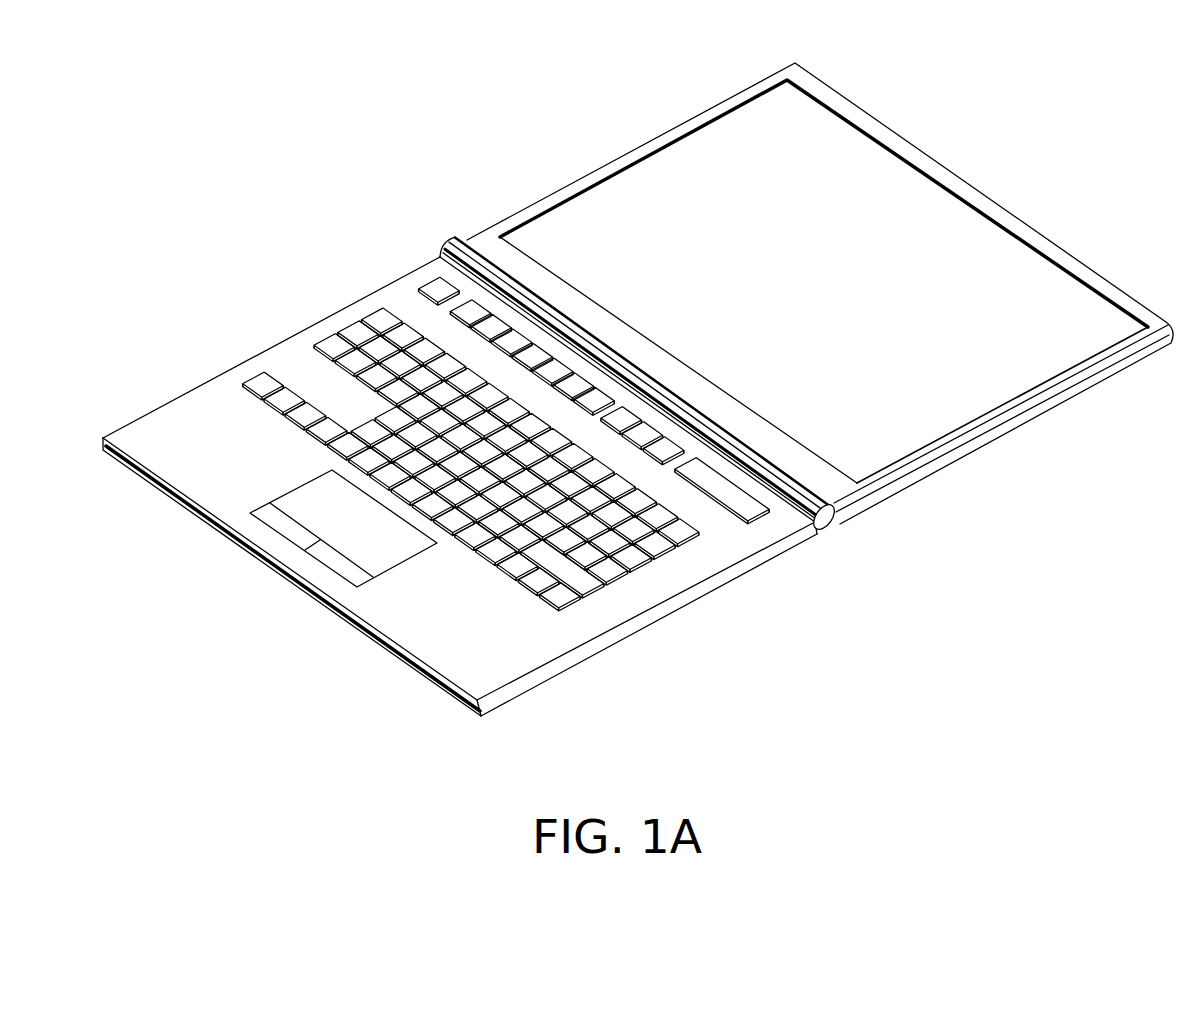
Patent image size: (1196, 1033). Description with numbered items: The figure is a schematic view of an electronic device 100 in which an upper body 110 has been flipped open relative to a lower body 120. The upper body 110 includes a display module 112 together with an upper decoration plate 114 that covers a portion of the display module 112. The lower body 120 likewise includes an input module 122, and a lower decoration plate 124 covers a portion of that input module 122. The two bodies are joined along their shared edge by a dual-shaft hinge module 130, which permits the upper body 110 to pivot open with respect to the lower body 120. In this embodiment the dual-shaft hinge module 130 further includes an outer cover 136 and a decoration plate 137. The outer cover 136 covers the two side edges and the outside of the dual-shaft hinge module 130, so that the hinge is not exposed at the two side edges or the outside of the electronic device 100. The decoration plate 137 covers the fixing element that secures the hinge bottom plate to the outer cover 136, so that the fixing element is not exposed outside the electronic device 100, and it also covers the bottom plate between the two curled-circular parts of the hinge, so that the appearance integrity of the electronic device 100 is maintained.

The electronic device 100 is at (1088, 697).
The upper body 110 is at (556, 89).
The display module 112 is at (606, 192).
The upper decoration plate 114 is at (487, 243).
The lower body 120 is at (244, 252).
The input module 122 is at (305, 358).
The lower decoration plate 124 is at (205, 403).
The dual-shaft hinge module 130 is at (824, 546).
The outer cover 136 is at (828, 524).
The decoration plate 137 is at (796, 510).